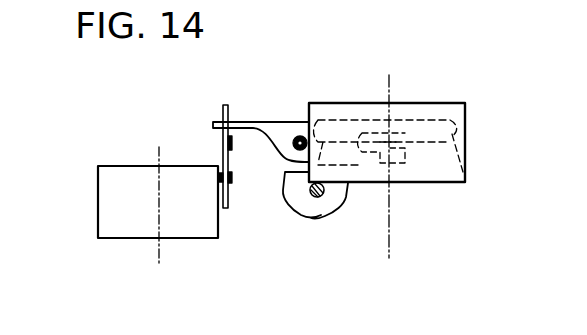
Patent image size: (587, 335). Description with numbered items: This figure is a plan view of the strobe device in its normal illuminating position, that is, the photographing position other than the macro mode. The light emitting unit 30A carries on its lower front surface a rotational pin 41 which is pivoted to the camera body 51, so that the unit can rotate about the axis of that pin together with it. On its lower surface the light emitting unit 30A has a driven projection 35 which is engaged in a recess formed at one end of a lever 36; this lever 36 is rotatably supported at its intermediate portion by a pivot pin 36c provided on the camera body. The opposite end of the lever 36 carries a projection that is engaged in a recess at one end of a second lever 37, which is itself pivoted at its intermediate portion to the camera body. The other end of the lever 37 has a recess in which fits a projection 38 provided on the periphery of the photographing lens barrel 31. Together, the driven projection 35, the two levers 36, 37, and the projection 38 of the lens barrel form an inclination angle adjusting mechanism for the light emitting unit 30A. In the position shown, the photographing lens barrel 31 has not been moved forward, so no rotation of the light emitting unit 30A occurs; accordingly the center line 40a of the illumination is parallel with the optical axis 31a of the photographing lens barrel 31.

The light emitting unit 30A is at (435, 103).
The photographing lens barrel 31 is at (205, 240).
The optical axis 31a is at (158, 227).
The driven projection 35 is at (407, 145).
The lever 36 is at (362, 165).
The pivot pin 36c is at (298, 135).
The lever 37 is at (221, 152).
The projection 38 is at (232, 180).
The center line of the illumination 40a is at (389, 237).
The rotational pin 41 is at (318, 198).
The camera body 51 is at (306, 221).